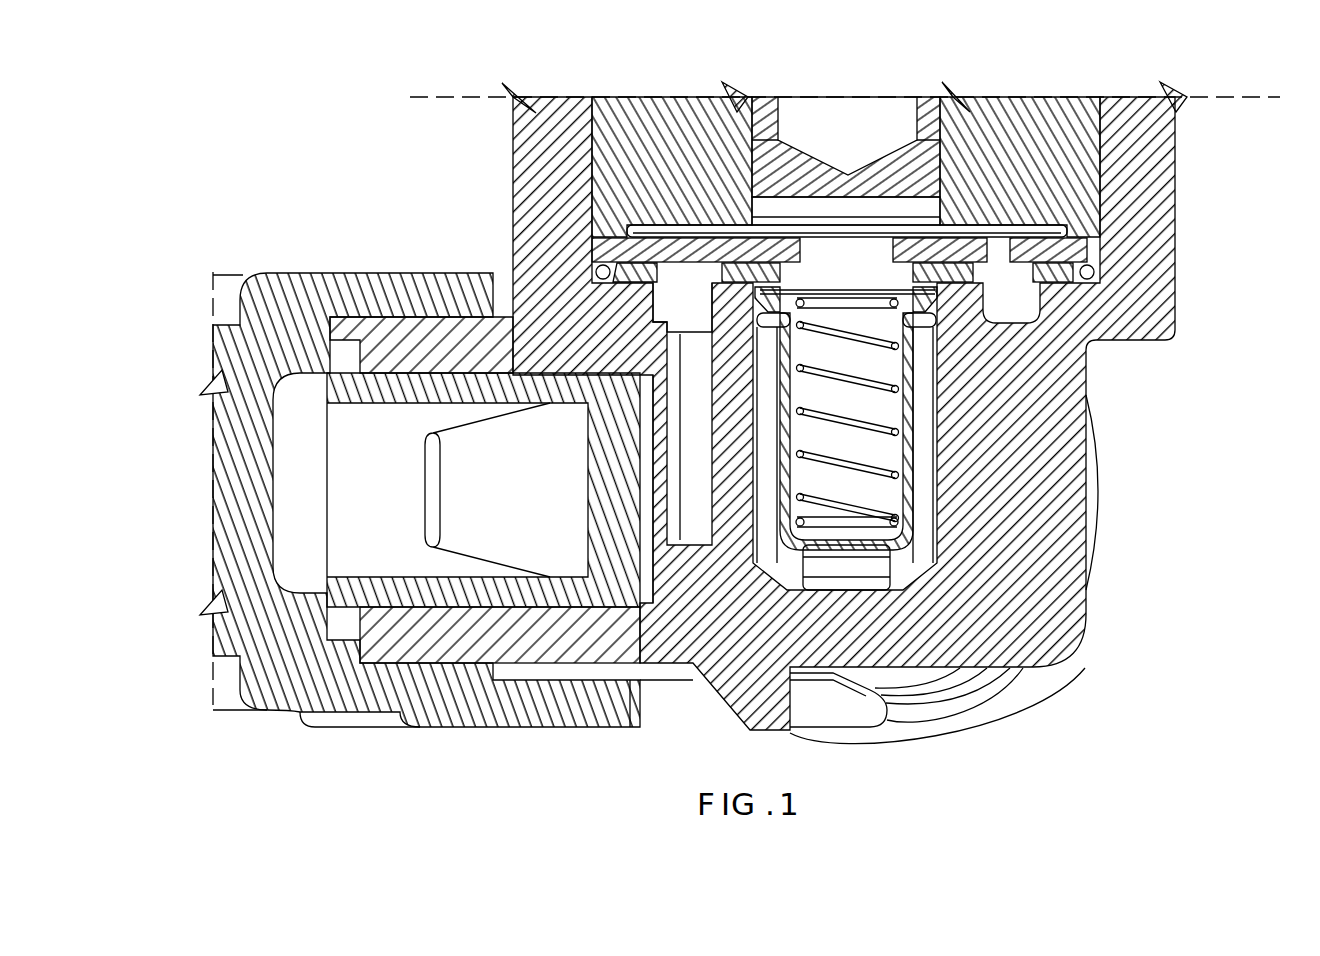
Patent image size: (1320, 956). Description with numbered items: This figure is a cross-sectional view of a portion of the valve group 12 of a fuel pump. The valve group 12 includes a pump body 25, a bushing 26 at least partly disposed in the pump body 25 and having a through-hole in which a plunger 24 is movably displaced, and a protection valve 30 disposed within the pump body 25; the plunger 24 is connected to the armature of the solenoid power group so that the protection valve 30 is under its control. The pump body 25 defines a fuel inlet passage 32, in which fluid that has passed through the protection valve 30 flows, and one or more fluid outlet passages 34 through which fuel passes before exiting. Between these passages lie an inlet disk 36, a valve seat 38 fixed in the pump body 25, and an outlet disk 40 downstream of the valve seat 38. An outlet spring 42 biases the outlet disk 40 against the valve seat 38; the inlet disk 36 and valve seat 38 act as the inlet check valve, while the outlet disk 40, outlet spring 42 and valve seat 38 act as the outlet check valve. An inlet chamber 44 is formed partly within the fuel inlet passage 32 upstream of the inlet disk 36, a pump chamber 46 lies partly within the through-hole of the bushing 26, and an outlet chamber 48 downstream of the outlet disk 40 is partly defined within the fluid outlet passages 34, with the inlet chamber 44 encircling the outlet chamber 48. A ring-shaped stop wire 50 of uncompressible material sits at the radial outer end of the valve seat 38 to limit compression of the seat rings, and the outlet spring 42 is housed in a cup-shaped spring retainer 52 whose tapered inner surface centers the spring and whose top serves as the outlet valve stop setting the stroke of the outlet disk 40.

The valve group 12 is at (172, 124).
The plunger 24 is at (827, 103).
The pump body 25 is at (1160, 118).
The bushing 26 is at (721, 107).
The protection valve 30 is at (463, 487).
The fuel inlet passage 32 is at (690, 530).
The fluid outlet passages 34 is at (792, 588).
The inlet disk 36 is at (693, 237).
The valve seat 38 is at (1080, 250).
The outlet disk 40 is at (670, 298).
The outlet spring 42 is at (892, 377).
The inlet chamber 44 is at (700, 333).
The pump chamber 46 is at (923, 207).
The outlet chamber 48 is at (923, 300).
The stop wire 50 is at (308, 287).
The spring retainer 52 is at (912, 446).